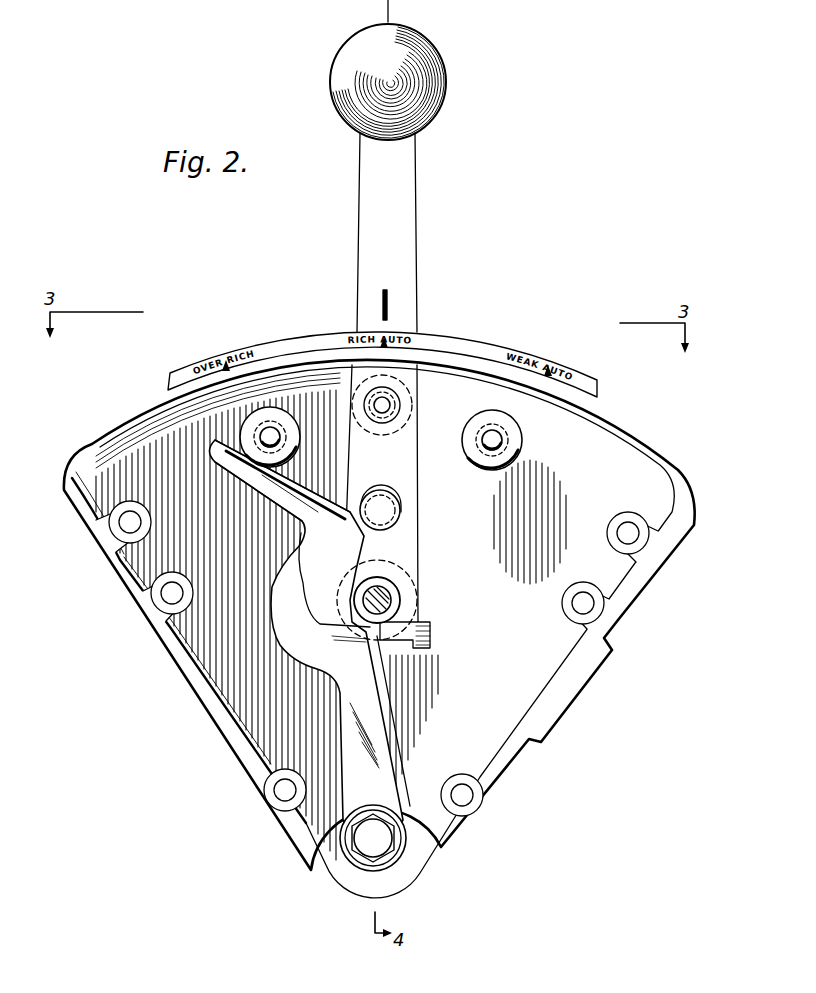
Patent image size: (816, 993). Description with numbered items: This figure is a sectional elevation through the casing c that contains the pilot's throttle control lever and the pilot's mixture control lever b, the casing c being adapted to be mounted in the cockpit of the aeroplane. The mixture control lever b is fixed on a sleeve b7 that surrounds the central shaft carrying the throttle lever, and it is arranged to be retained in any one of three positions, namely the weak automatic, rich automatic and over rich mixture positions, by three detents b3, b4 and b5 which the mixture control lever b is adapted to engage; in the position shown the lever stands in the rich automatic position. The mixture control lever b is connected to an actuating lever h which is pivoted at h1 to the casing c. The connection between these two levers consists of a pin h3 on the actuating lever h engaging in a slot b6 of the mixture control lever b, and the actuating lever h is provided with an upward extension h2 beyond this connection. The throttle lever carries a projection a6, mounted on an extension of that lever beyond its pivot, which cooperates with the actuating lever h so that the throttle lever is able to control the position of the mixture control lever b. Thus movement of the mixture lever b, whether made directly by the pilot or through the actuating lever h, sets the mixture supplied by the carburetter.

The mixture control lever b is at (362, 188).
The detent b3 is at (270, 437).
The detent b4 is at (383, 405).
The detent b5 is at (492, 440).
The slot b6 is at (392, 487).
The sleeve b7 is at (392, 588).
The projection a6 is at (392, 602).
The casing c is at (543, 668).
The actuating lever h is at (363, 701).
The pivot h1 is at (370, 840).
The upward extension h2 is at (265, 465).
The pin h3 is at (400, 511).